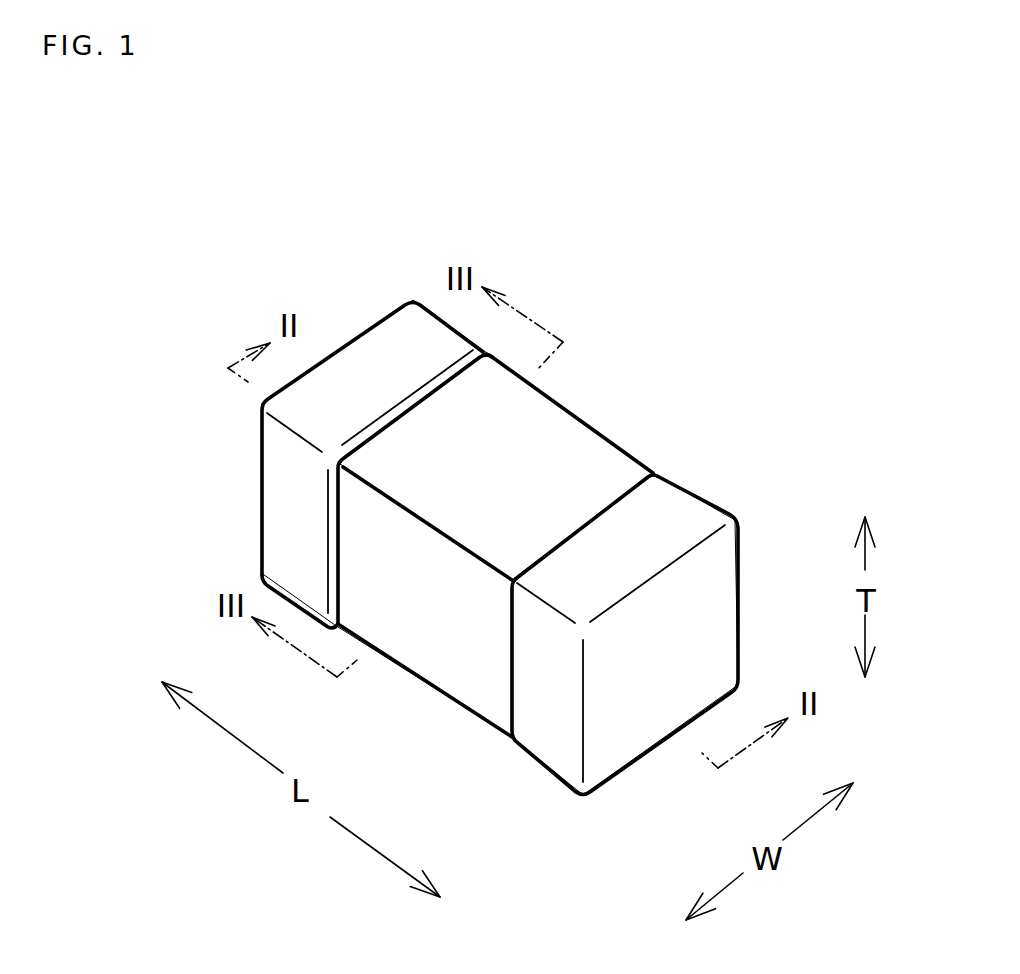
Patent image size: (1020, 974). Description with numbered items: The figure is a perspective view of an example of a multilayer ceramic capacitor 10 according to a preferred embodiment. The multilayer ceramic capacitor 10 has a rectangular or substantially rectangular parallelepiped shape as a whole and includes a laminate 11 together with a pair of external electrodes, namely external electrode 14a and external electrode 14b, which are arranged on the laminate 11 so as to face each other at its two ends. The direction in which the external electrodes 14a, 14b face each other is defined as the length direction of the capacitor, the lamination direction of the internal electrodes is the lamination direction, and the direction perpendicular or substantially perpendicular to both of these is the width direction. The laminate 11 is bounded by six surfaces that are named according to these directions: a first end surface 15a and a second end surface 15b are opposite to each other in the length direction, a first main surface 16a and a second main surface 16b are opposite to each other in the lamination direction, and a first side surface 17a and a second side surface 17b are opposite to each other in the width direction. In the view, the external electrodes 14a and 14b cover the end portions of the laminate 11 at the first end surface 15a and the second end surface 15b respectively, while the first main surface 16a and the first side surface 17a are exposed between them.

The multilayer ceramic capacitor 10 is at (710, 313).
The laminate 11 is at (550, 428).
The external electrode 14a is at (383, 347).
The external electrode 14b is at (693, 503).
The first end surface 15a is at (297, 489).
The second end surface 15b is at (598, 703).
The first main surface 16a is at (605, 460).
The second main surface 16b is at (485, 693).
The first side surface 17a is at (430, 640).
The second side surface 17b is at (652, 468).